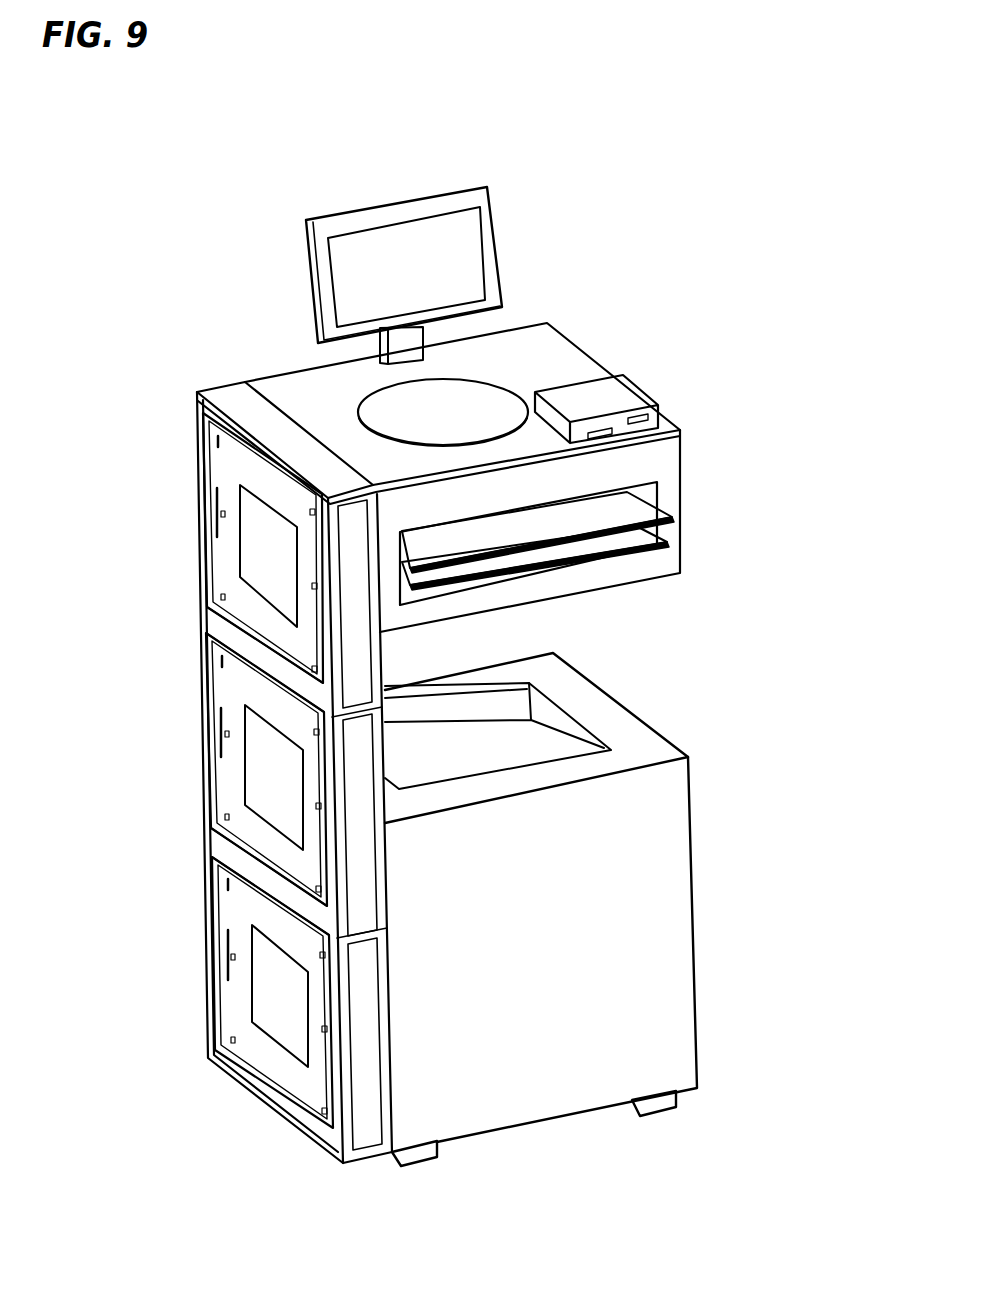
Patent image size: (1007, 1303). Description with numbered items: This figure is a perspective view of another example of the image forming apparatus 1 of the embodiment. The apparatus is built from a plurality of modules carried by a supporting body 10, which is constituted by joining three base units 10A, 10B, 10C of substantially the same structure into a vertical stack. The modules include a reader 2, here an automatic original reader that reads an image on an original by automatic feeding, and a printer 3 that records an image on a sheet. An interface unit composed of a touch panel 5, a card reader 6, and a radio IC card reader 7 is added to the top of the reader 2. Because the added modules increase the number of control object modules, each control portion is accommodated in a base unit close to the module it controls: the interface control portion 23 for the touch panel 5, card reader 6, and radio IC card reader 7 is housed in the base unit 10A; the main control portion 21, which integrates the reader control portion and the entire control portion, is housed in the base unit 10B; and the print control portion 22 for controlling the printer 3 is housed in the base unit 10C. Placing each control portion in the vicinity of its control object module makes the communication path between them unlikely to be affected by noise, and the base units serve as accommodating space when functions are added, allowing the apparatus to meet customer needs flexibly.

The image forming apparatus 1 is at (618, 260).
The supporting body 10 is at (188, 372).
The base unit 10A is at (193, 565).
The base unit 10B is at (198, 742).
The base unit 10C is at (200, 948).
The reader 2 is at (590, 517).
The printer 3 is at (647, 853).
The touch panel 5 is at (355, 277).
The card reader 6 is at (622, 398).
The radio IC card reader 7 is at (482, 400).
The main control portion 21 is at (268, 792).
The print control portion 22 is at (270, 1012).
The interface control portion 23 is at (267, 582).